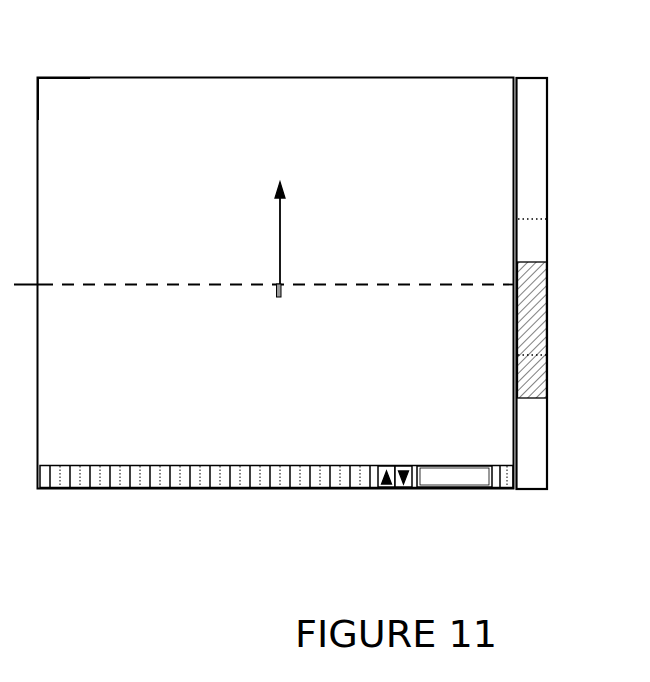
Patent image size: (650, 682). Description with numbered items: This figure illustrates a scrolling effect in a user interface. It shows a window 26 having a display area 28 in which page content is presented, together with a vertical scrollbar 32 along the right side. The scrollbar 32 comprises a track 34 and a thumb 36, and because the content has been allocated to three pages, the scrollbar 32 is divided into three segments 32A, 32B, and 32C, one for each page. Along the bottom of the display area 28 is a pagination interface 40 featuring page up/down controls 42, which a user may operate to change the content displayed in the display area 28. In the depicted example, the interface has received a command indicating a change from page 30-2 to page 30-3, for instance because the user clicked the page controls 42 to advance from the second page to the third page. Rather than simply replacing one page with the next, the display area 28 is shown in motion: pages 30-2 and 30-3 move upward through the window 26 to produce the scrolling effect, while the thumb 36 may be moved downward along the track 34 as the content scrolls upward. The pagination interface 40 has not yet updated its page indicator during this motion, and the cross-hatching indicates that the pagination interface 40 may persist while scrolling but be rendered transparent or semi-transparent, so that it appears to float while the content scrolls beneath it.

The window 26 is at (215, 80).
The display area 28 is at (52, 98).
The page 30-2 is at (177, 185).
The page 30-3 is at (190, 344).
The scrollbar 32 is at (514, 157).
The scrollbar segment 32A is at (551, 78).
The scrollbar segment 32B is at (551, 220).
The scrollbar segment 32C is at (551, 355).
The track 34 is at (547, 182).
The thumb 36 is at (526, 289).
The pagination interface 40 is at (458, 465).
The page up/down controls 42 is at (392, 465).